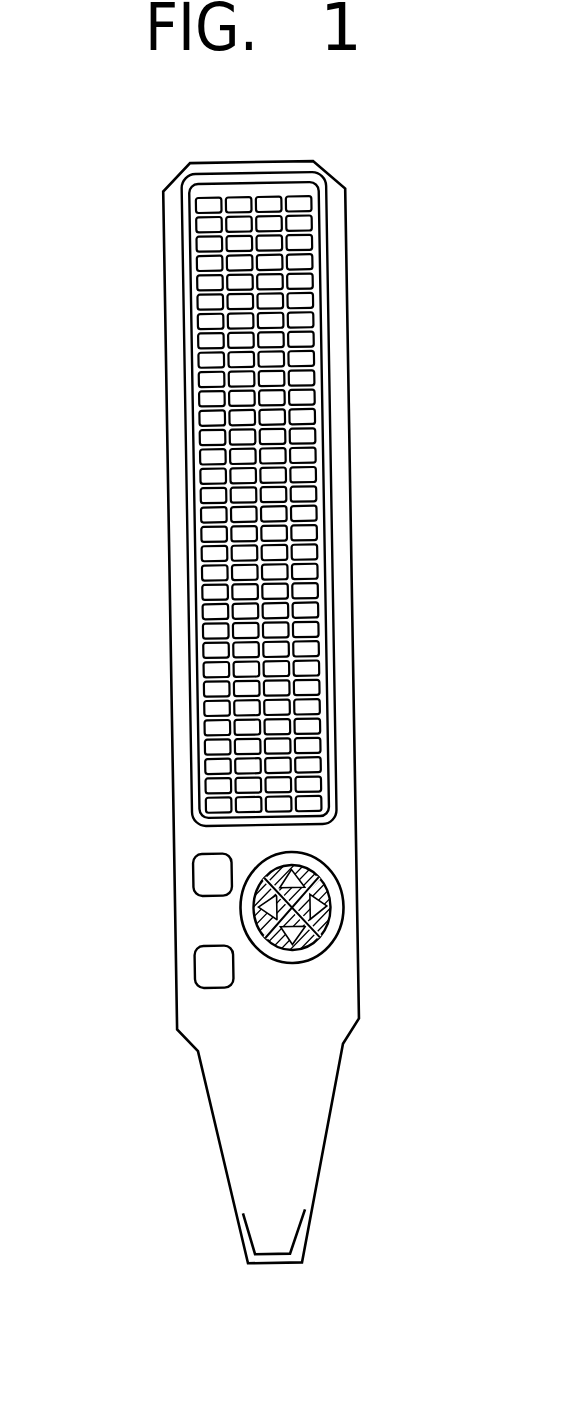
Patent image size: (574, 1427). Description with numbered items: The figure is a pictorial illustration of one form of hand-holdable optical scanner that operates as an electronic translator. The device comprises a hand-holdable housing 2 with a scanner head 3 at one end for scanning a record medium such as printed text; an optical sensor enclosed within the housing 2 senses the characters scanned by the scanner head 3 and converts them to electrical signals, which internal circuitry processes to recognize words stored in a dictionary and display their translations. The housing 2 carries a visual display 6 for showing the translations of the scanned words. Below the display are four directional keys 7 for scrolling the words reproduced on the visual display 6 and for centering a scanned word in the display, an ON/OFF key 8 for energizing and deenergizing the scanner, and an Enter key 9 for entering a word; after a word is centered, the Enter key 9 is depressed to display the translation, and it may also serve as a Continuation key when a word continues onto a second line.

The hand-holdable housing 2 is at (171, 662).
The scanner head 3 is at (298, 1230).
The visual display 6 is at (210, 437).
The four directional keys 7 is at (328, 903).
The ON/OFF key 8 is at (207, 962).
The Enter key 9 is at (213, 860).